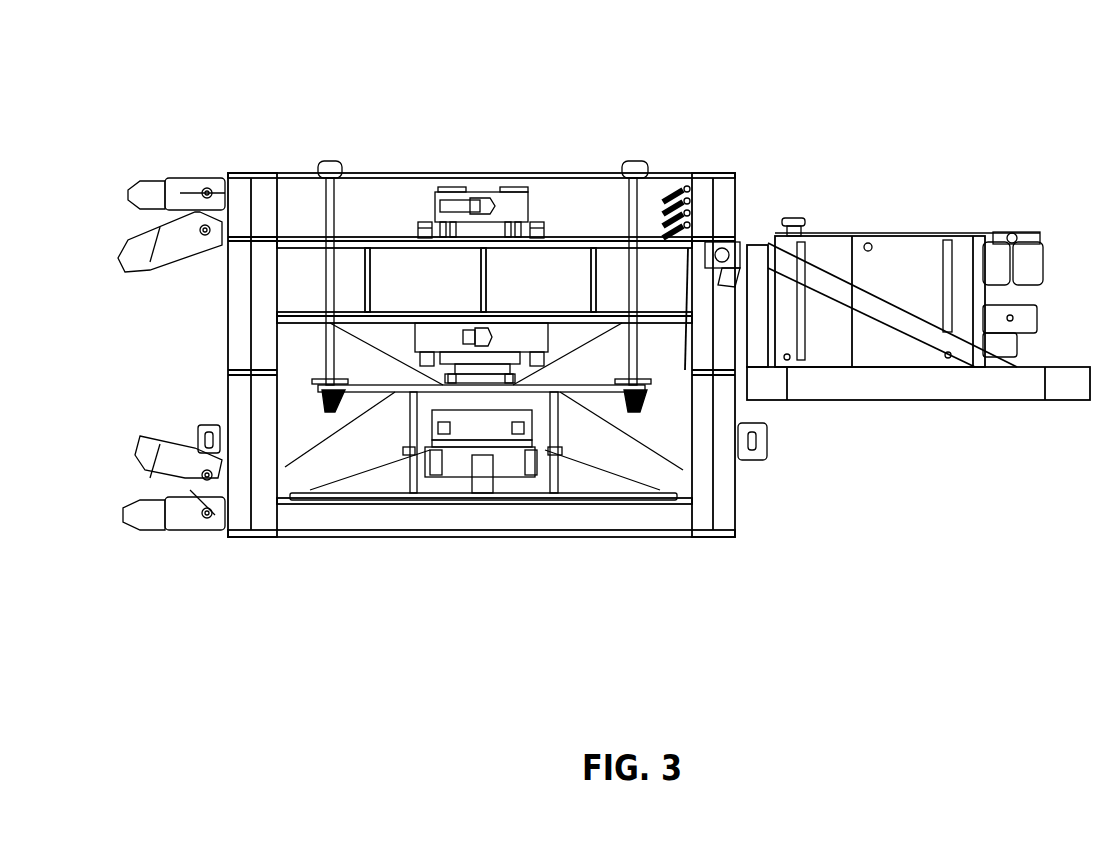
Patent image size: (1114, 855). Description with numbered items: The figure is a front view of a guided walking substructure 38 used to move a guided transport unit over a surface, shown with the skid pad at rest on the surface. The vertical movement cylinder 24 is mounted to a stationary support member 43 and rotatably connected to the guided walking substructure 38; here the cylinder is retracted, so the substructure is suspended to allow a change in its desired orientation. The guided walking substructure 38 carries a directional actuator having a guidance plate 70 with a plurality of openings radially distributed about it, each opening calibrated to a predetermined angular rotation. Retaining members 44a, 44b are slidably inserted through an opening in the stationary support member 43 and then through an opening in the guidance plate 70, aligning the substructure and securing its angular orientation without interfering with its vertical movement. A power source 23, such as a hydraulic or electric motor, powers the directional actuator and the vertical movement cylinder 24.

The power source 23 is at (907, 285).
The vertical movement cylinder 24 is at (432, 337).
The guided walking substructure 38 is at (440, 492).
The stationary support member 43 is at (405, 275).
The retaining member 44a is at (330, 202).
The retaining member 44b is at (637, 205).
The guidance plate 70 is at (578, 385).